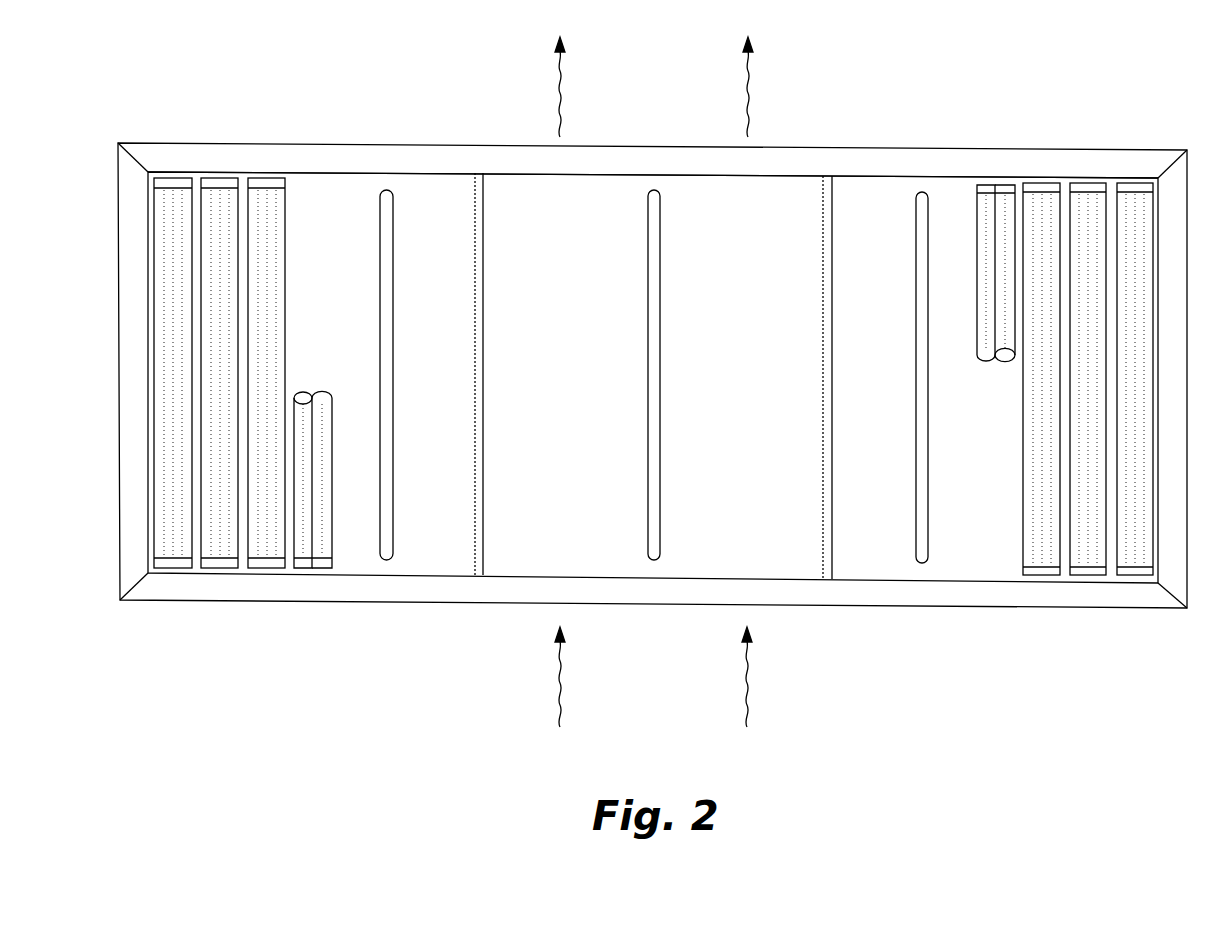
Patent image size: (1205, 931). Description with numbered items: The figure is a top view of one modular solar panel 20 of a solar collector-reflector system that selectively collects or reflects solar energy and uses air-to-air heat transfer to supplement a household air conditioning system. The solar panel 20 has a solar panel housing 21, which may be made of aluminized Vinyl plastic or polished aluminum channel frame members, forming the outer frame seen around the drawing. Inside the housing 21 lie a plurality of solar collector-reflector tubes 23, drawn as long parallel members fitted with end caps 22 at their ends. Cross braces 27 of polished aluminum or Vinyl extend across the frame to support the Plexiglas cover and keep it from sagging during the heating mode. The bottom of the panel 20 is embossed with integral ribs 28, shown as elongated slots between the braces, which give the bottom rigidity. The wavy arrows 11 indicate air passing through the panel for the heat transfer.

The air flow 11 is at (748, 697).
The modular solar panel 20 is at (1128, 110).
The solar panel housing 21 is at (988, 168).
The end caps 22 is at (277, 183).
The solar collector-reflector tubes 23 is at (275, 278).
The cross braces 27 is at (483, 303).
The integral ribs 28 is at (928, 545).